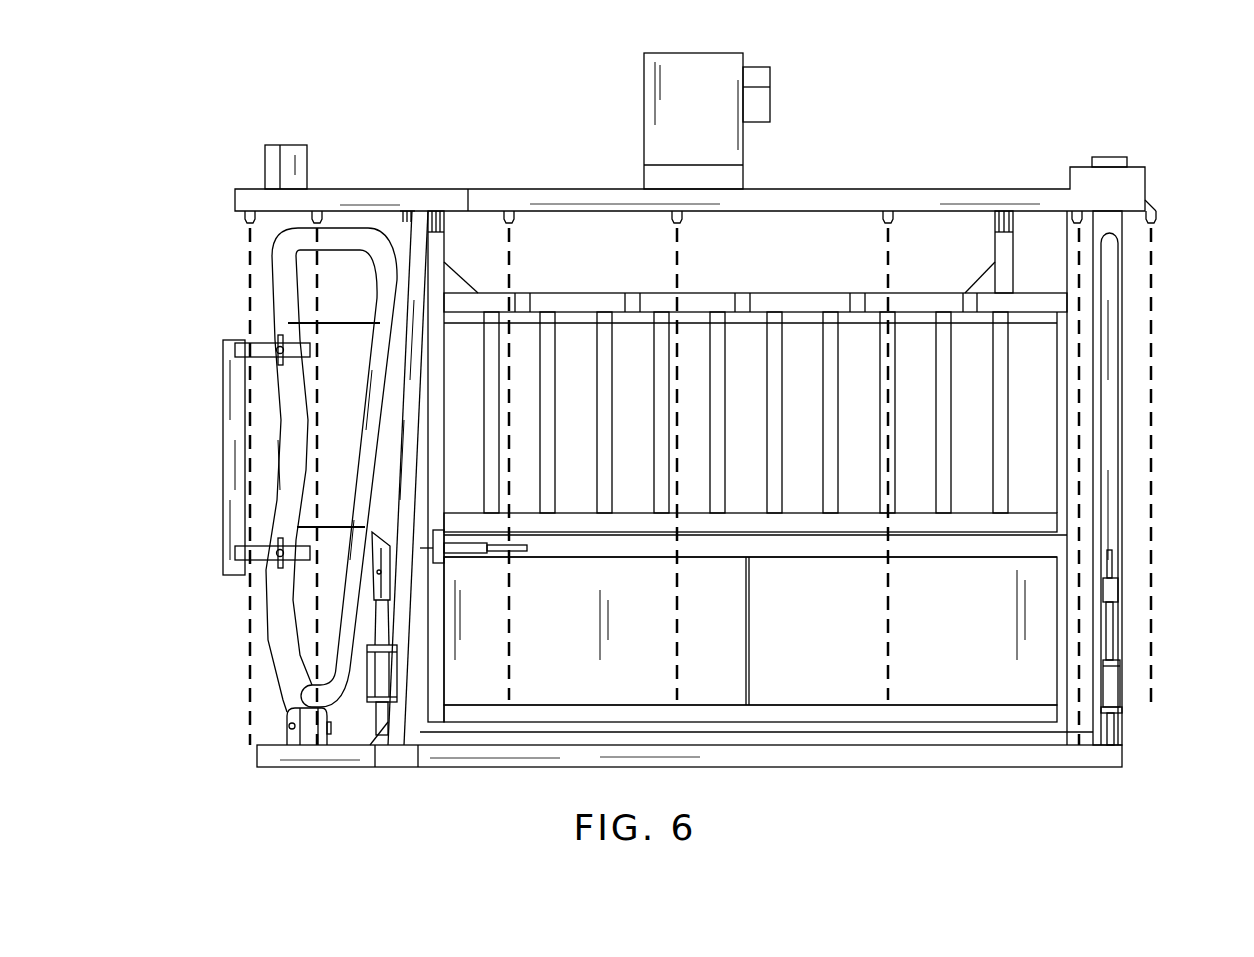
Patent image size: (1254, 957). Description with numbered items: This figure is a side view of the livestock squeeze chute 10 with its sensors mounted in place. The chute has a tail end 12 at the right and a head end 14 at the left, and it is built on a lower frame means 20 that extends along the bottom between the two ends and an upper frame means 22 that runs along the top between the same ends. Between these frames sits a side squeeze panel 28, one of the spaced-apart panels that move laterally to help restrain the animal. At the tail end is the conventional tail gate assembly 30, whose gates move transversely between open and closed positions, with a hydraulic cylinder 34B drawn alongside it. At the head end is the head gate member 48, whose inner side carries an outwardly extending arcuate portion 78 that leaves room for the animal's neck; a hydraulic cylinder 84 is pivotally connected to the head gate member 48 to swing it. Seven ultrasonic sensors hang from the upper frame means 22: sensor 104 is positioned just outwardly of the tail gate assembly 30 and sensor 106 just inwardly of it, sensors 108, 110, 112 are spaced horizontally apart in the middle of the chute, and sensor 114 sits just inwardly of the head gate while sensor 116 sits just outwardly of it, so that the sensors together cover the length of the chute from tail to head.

The livestock squeeze chute 10 is at (893, 174).
The tail end 12 is at (1170, 298).
The head end 14 is at (240, 312).
The lower frame means 20 is at (838, 760).
The upper frame means 22 is at (957, 193).
The side squeeze panel 28 is at (825, 652).
The tail gate assembly 30 is at (1127, 472).
The hydraulic cylinder 34B is at (1112, 690).
The head gate member 48 is at (352, 232).
The arcuate portion 78 is at (235, 470).
The hydraulic cylinder 84 is at (385, 680).
The sensor 104 is at (1158, 215).
The sensor 106 is at (1075, 214).
The sensor 108 is at (885, 215).
The sensor 110 is at (683, 215).
The sensor 112 is at (515, 215).
The sensor 114 is at (318, 213).
The sensor 116 is at (243, 218).